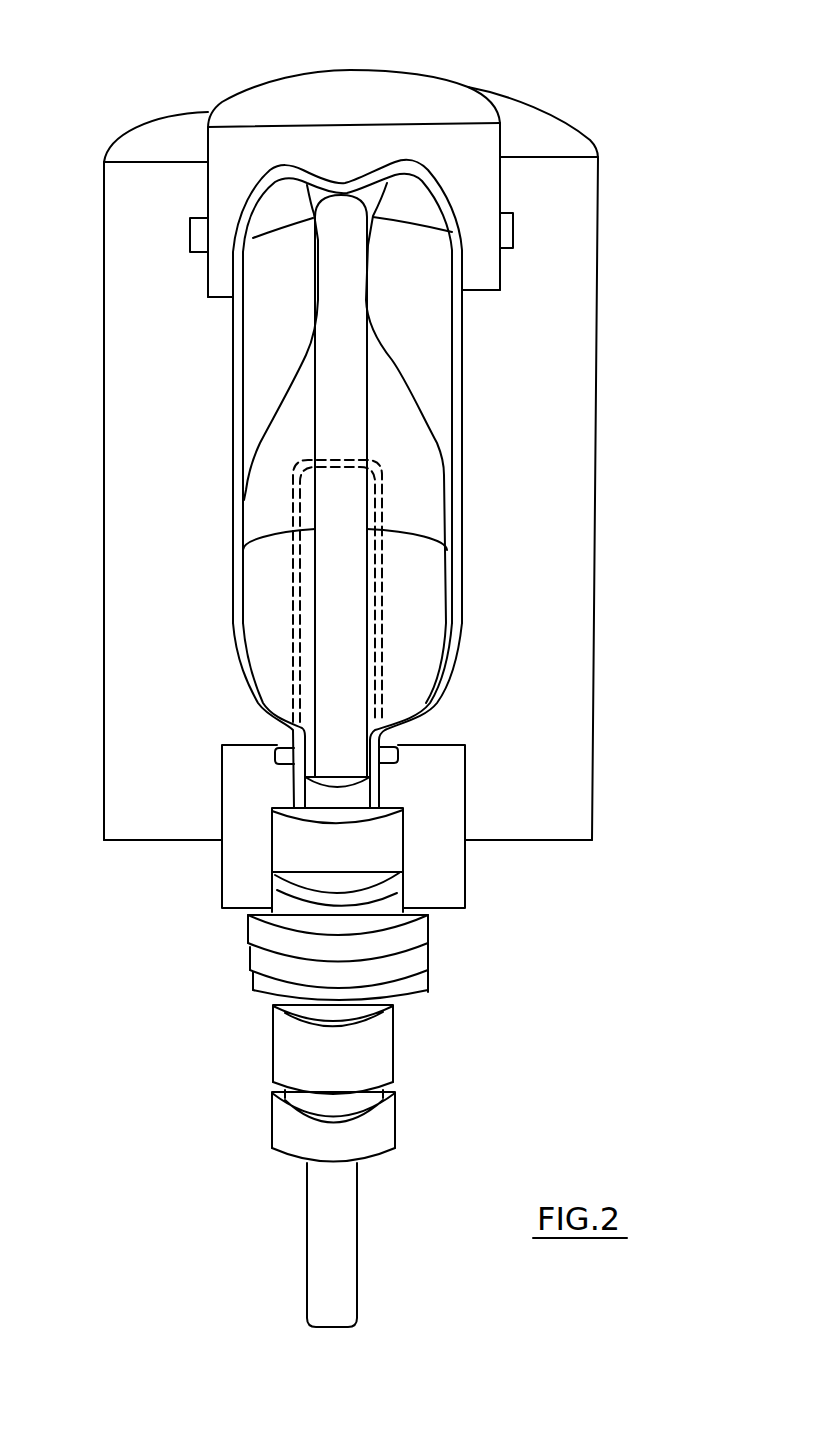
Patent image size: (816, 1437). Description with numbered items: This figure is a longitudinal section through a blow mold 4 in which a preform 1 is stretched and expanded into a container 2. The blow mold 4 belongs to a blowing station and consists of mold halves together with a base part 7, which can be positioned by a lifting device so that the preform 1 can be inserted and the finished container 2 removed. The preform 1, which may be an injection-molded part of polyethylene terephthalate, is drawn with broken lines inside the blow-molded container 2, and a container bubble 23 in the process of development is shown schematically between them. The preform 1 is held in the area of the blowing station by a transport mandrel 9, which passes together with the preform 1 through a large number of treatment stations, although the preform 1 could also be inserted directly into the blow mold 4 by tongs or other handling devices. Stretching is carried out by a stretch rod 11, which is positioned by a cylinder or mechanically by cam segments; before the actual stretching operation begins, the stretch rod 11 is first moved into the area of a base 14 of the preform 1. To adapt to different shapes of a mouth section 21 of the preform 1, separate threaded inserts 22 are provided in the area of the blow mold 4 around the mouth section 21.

The preform 1 is at (378, 628).
The container 2 is at (458, 400).
The blow mold 4 is at (552, 472).
The base part 7 is at (433, 93).
The transport mandrel 9 is at (415, 980).
The stretch rod 11 is at (307, 1260).
The base 14 is at (373, 463).
The mouth section 21 is at (385, 774).
The threaded inserts 22 is at (446, 866).
The container bubble 23 is at (392, 360).